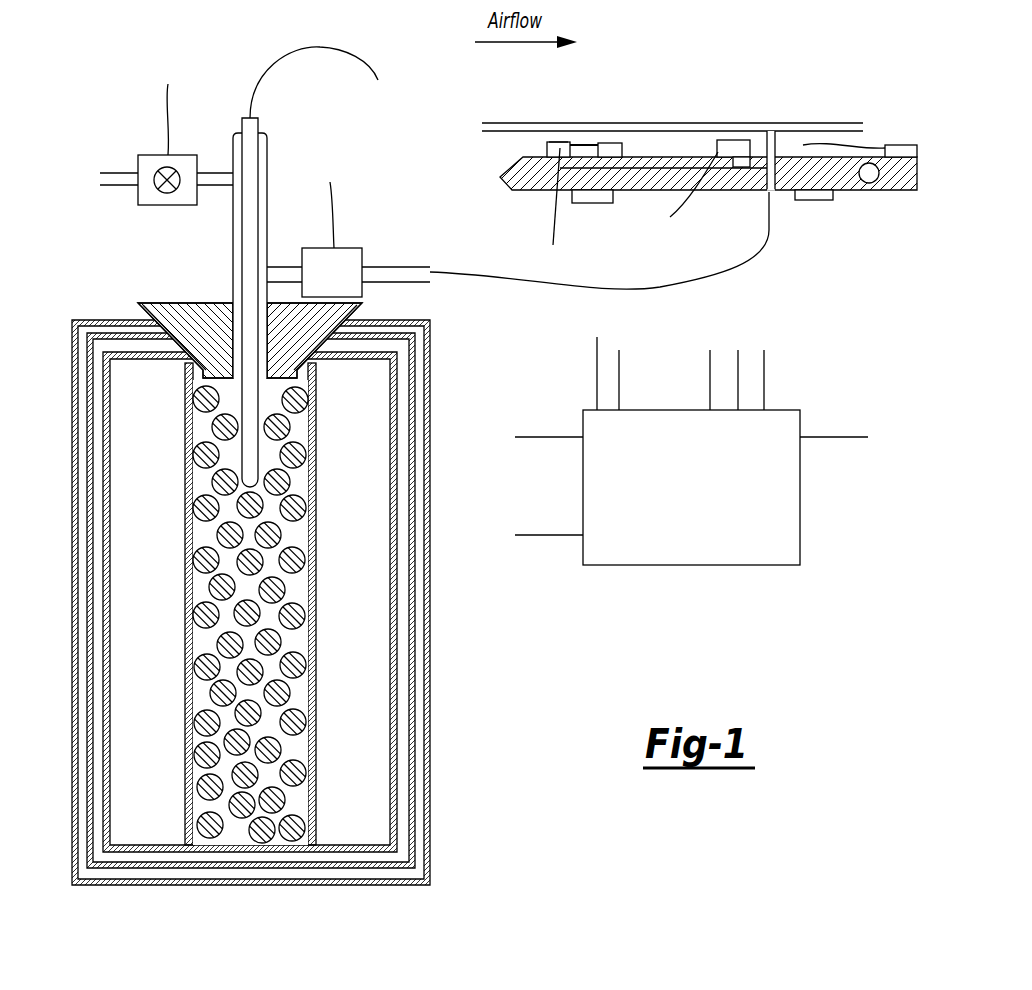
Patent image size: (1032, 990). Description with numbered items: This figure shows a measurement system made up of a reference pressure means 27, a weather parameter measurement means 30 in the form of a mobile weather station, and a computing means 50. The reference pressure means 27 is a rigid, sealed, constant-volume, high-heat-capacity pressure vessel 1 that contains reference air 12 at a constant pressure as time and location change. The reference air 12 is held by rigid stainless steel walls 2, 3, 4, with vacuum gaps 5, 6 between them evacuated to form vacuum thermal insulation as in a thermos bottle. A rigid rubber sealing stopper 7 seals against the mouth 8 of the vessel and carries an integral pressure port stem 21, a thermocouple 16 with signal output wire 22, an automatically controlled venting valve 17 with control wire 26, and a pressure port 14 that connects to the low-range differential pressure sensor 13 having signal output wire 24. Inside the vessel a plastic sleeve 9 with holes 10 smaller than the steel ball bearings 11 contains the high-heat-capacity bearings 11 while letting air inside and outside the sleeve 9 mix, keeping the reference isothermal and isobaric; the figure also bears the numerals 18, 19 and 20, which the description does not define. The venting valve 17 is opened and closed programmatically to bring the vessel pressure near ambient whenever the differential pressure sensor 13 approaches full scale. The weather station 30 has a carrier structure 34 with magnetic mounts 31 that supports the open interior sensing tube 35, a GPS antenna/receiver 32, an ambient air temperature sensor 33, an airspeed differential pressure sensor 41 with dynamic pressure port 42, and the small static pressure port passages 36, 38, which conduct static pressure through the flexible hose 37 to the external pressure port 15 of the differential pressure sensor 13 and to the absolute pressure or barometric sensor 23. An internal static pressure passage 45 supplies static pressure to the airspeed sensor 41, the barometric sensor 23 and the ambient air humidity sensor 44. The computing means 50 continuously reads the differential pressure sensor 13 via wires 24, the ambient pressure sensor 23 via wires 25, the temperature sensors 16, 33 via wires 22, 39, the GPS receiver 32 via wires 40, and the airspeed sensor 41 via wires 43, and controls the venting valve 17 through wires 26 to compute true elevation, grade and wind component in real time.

The pressure vessel 1 is at (57, 821).
The rigid stainless steel wall 2 is at (72, 385).
The rigid stainless steel wall 3 is at (90, 457).
The rigid stainless steel wall 4 is at (108, 535).
The vacuum gap 5 is at (82, 422).
The vacuum gap 6 is at (98, 497).
The rigid rubber sealing stopper 7 is at (175, 313).
The mouth 8 is at (347, 332).
The plastic sleeve 9 is at (311, 715).
The holes 10 is at (311, 650).
The steel ball bearings 11 is at (297, 512).
The reference air 12 is at (198, 702).
The low-range differential pressure sensor 13 is at (347, 248).
The pressure port 14 is at (281, 267).
The external pressure port 15 is at (400, 267).
The thermocouple 16 is at (247, 267).
The automatically controlled venting valve 17 is at (170, 205).
The pipe 18 is at (215, 180).
The pipe 19 is at (123, 180).
The probe tube top end 20 is at (235, 148).
The integral pressure port stem 21 is at (267, 148).
The signal output wire 22 is at (416, 299).
The absolute pressure or barometric sensor 23 is at (733, 140).
The signal output wire 24 is at (453, 304).
The connecting wires 25 is at (654, 281).
The control wire 26 is at (526, 255).
The reference pressure means 27 is at (449, 376).
The weather parameter measurement means 30 is at (888, 252).
The magnetic mounts 31 is at (818, 200).
The GPS antenna/receiver 32 is at (902, 145).
The ambient air temperature sensor 33 is at (622, 150).
The carrier structure 34 is at (527, 192).
The open interior sensing tube 35 is at (698, 127).
The static pressure port passage 36 is at (771, 131).
The flexible hose 37 is at (740, 270).
The static pressure sensing port 38 is at (772, 192).
The connecting wires 39 is at (576, 143).
The connecting wires 40 is at (830, 147).
The airspeed differential pressure sensor 41 is at (557, 142).
The dynamic pressure port 42 is at (548, 142).
The connecting wires 43 is at (631, 279).
The ambient air humidity sensor 44 is at (870, 184).
The internal static pressure passage 45 is at (924, 206).
The computing means 50 is at (705, 597).